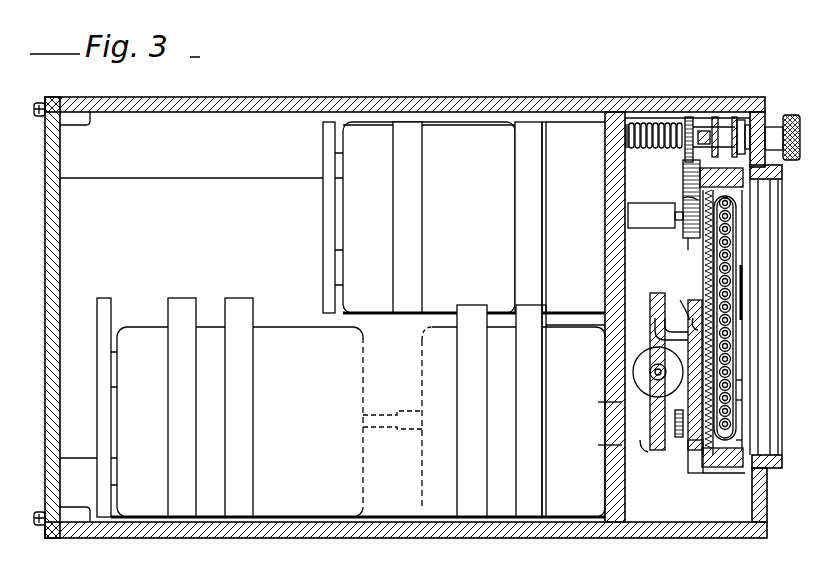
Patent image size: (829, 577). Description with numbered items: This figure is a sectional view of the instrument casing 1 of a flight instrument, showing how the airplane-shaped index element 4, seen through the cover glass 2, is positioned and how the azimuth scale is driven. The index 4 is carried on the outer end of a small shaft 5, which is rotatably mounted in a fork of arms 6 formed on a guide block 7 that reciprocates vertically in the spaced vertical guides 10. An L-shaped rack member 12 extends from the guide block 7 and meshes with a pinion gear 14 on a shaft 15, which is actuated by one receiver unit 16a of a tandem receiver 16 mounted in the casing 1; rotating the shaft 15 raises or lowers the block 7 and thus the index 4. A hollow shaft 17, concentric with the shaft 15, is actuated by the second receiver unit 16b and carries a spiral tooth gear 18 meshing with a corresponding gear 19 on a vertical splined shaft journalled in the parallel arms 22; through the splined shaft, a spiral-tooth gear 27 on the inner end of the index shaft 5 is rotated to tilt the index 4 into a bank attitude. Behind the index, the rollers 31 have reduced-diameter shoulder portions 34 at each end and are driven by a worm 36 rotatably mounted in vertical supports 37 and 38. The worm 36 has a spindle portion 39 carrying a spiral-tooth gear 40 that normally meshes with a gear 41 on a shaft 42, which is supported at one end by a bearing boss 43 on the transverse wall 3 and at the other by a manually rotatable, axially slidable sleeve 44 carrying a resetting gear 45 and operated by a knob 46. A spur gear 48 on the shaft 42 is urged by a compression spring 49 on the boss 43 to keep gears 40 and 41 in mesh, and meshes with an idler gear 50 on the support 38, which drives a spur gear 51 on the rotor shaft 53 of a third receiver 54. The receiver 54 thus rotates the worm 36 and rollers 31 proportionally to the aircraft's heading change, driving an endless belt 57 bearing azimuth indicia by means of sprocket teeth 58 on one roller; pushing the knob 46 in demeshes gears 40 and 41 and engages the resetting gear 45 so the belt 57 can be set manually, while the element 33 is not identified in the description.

The instrument casing 1 is at (477, 97).
The cover glass 2 is at (766, 310).
The transverse wall 3 is at (607, 182).
The index element 4 is at (745, 275).
The shaft 5 is at (694, 315).
The arms 6 is at (682, 301).
The guide block 7 is at (658, 372).
The vertical guides 10 is at (705, 290).
The L-shaped rack member 12 is at (666, 395).
The pinion gear 14 is at (687, 446).
The shaft 15 is at (382, 431).
The tandem receiver 16 is at (351, 429).
The receiver unit 16a is at (283, 447).
The second receiver unit 16b is at (554, 478).
The hollow shaft 17 is at (614, 448).
The spiral tooth gear 18 is at (650, 452).
The spiral tooth gear 19 is at (660, 331).
The parallel arms 22 is at (599, 404).
The spiral-tooth gear 27 is at (656, 293).
The rollers 31 is at (738, 385).
The lever 33 is at (683, 198).
The reduced-diameter shoulder portions 34 is at (730, 228).
The worm 36 is at (720, 470).
The vertical support 37 is at (722, 468).
The vertical support 38 is at (742, 203).
The spindle portion 39 is at (683, 178).
The spiral-tooth gear 40 is at (714, 117).
The spiral-tooth gear 41 is at (733, 117).
The shaft 42 is at (700, 128).
The bearing boss 43 is at (652, 123).
The sleeve 44 is at (740, 118).
The spiral-tooth resetting gear 45 is at (747, 124).
The knob 46 is at (791, 115).
The spur gear 48 is at (688, 117).
The compression spring 49 is at (632, 124).
The idler gear 50 is at (688, 156).
The spur gear 51 is at (688, 240).
The shaft 53 is at (676, 230).
The Autosyn receiver 54 is at (442, 240).
The endless belt 57 is at (738, 400).
The sprocket teeth 58 is at (740, 440).